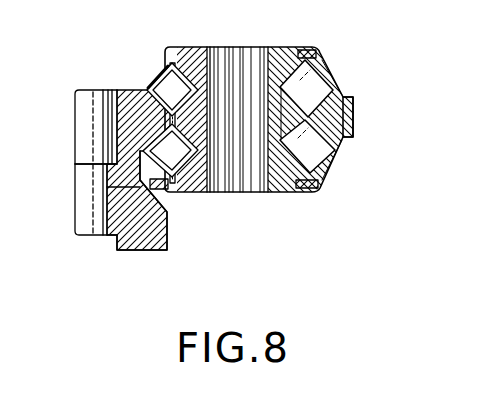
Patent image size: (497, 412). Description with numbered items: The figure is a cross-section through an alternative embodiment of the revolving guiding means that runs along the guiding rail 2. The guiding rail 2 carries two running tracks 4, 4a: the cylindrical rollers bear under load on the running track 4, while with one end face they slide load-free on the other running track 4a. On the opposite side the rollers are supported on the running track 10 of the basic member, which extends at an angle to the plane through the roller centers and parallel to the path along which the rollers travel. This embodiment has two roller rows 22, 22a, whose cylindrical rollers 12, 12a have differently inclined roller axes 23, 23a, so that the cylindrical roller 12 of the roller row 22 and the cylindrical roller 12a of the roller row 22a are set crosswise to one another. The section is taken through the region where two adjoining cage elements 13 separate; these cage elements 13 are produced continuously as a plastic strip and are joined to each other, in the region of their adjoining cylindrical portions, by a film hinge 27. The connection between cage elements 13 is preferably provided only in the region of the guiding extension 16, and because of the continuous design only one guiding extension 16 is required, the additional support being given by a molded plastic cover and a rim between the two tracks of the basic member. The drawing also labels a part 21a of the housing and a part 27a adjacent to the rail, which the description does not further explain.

The guiding rail 2 is at (130, 235).
The running track 4 is at (117, 107).
The running track 4a is at (117, 148).
The running track 10 is at (295, 73).
The cylindrical roller 12 is at (320, 88).
The cylindrical roller 12a is at (296, 168).
The cage element 13 is at (160, 94).
The guiding extension 16 is at (304, 190).
The housing ring 21a is at (292, 47).
The roller row 22 is at (353, 108).
The roller row 22a is at (314, 176).
The roller axis 23 is at (160, 85).
The roller axis 23a is at (205, 228).
The film hinge 27 is at (186, 62).
The housing flange 27a is at (110, 192).